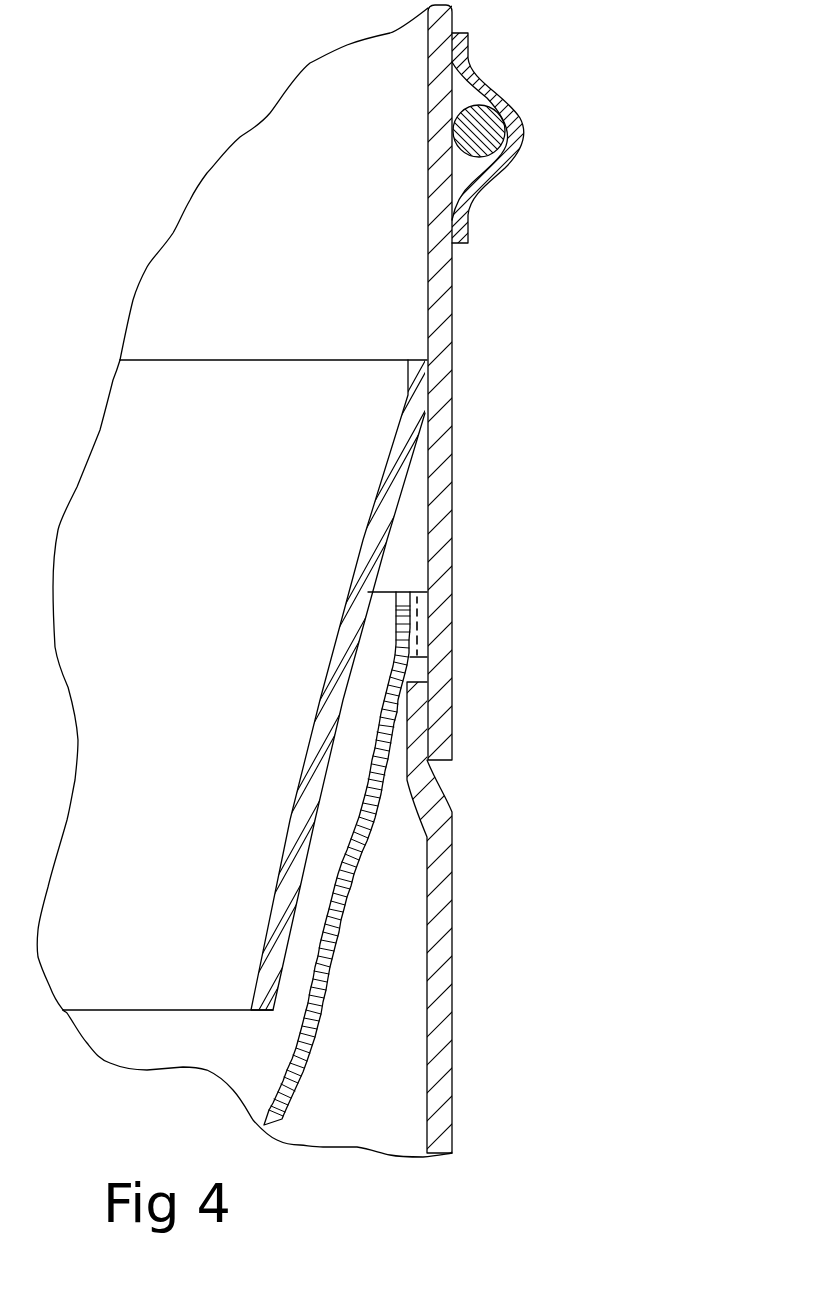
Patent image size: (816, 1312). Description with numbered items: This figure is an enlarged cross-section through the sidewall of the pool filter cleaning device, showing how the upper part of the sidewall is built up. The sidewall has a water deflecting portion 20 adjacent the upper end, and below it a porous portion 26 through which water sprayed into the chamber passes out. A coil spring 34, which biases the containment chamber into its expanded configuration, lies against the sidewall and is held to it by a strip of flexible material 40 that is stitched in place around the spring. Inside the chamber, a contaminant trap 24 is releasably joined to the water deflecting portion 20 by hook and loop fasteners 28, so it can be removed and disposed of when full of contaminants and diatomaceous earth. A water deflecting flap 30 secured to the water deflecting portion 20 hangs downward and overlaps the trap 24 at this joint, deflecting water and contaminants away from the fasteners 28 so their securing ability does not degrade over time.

The water deflecting portion 20 is at (318, 210).
The water deflecting flap 30 is at (193, 742).
The porous portion 26 is at (452, 893).
The strip of flexible material 40 is at (487, 90).
The coil spring 34 is at (482, 136).
The hook and loop fasteners 28 is at (420, 627).
The contaminant trap 24 is at (317, 1040).